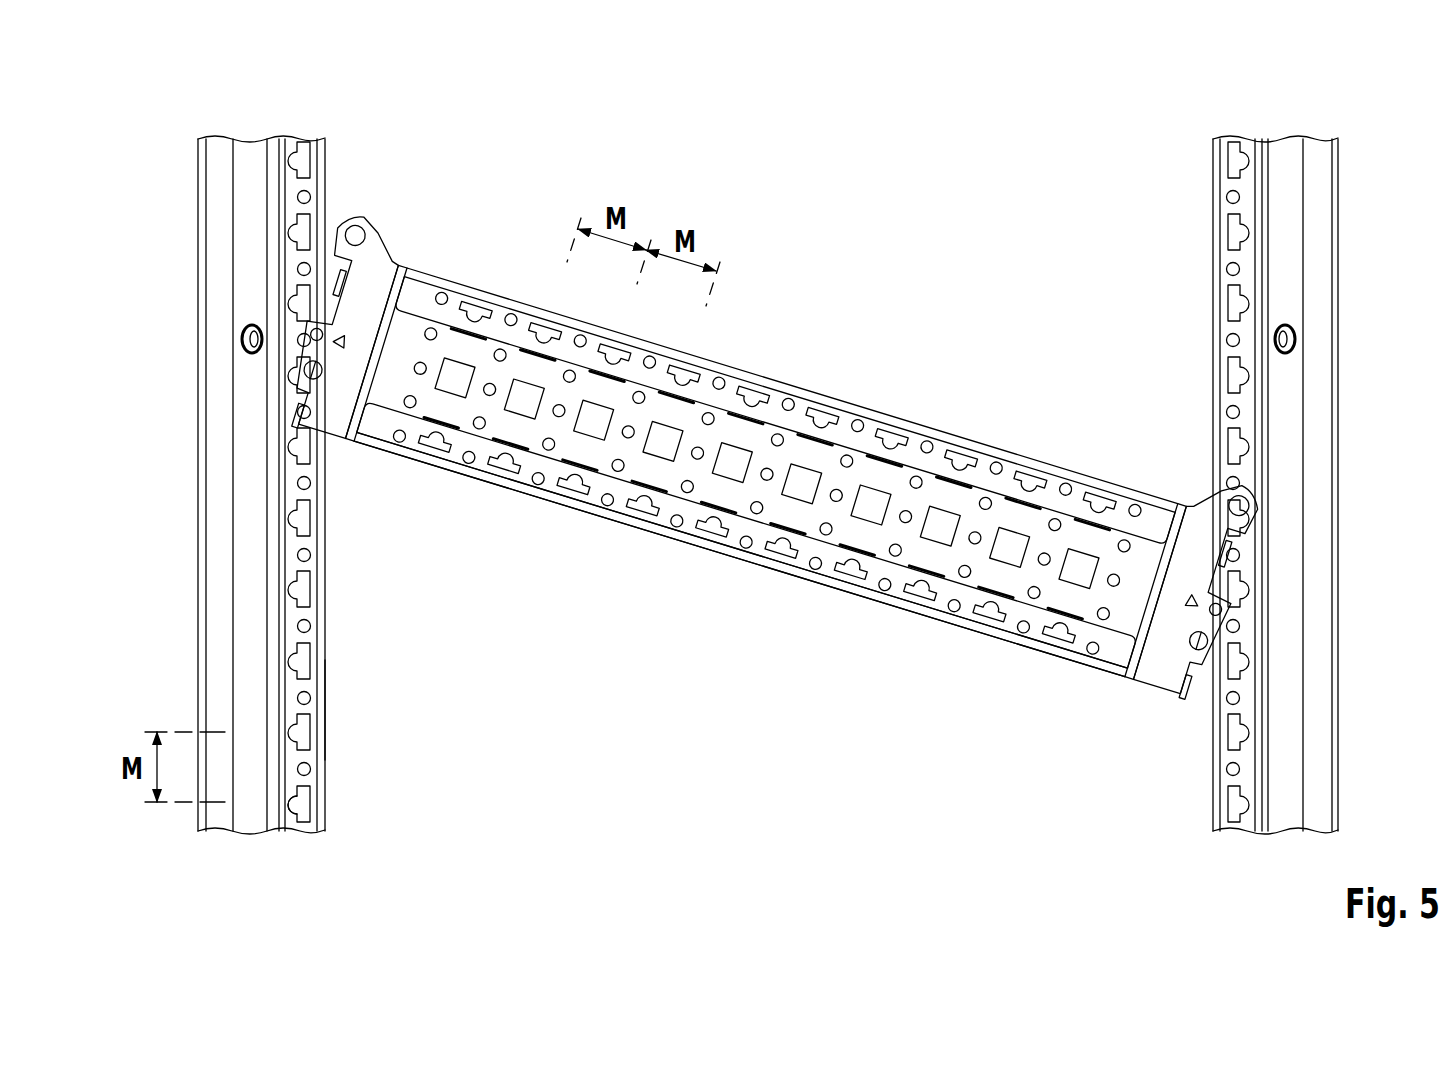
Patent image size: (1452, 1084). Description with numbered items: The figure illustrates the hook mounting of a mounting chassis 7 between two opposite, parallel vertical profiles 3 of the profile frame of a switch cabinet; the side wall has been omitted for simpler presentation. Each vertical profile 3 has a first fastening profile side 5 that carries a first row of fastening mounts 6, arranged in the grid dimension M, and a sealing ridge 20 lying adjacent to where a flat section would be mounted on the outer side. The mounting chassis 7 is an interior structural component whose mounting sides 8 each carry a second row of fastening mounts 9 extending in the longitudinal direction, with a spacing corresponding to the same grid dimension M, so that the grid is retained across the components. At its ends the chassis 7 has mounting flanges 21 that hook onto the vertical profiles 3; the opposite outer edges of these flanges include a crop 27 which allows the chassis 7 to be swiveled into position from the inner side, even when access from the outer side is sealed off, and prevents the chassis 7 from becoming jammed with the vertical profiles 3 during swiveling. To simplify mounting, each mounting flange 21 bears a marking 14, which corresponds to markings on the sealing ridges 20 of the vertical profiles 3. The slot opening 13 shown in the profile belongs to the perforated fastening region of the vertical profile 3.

The vertical profile 3 is at (248, 155).
The first fastening profile side 5 is at (327, 706).
The fastening mounts 6 is at (315, 804).
The mounting chassis 7 is at (765, 472).
The mounting side 8 is at (419, 467).
The fastening mounts 9 is at (684, 367).
The keyhole slot 13 is at (277, 776).
The marking 14 is at (339, 352).
The sealing ridge 20 is at (279, 153).
The mounting flange 21 is at (383, 252).
The crop 27 is at (297, 398).